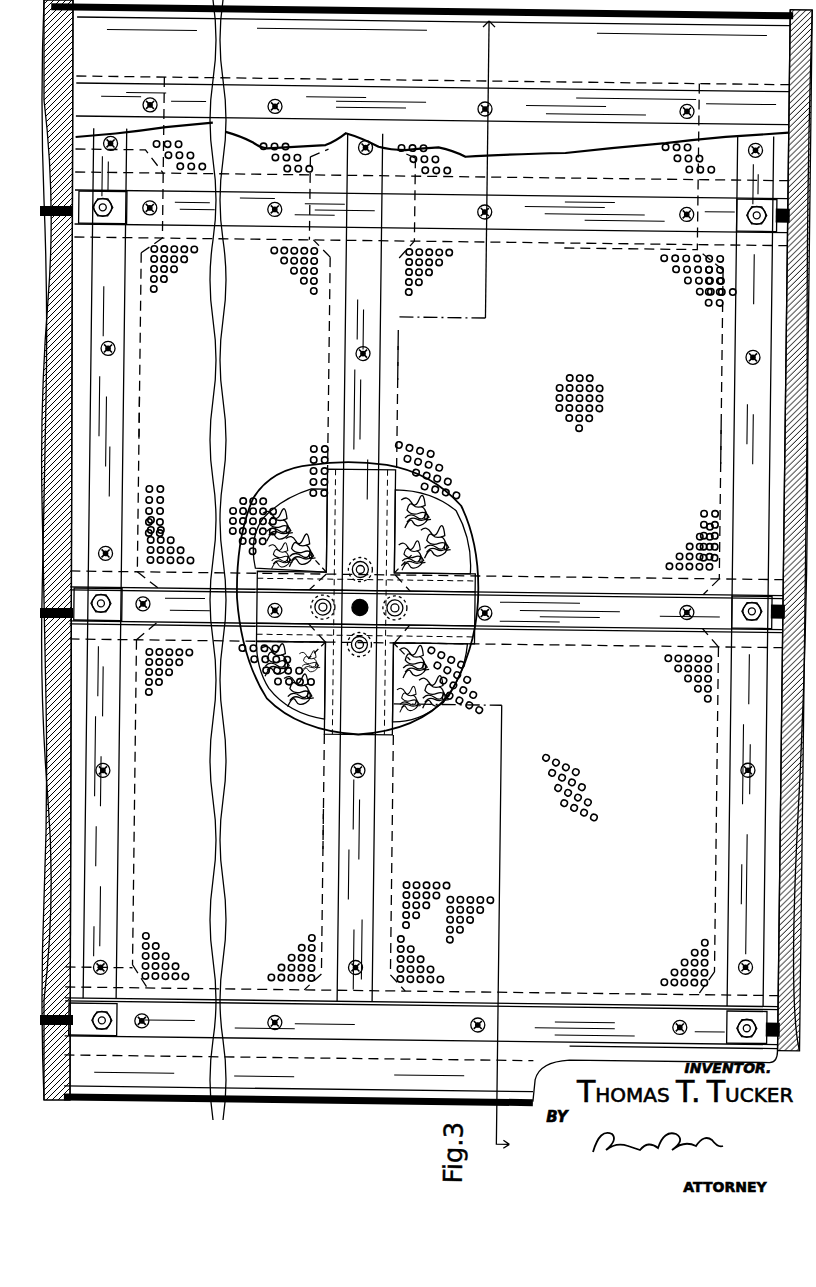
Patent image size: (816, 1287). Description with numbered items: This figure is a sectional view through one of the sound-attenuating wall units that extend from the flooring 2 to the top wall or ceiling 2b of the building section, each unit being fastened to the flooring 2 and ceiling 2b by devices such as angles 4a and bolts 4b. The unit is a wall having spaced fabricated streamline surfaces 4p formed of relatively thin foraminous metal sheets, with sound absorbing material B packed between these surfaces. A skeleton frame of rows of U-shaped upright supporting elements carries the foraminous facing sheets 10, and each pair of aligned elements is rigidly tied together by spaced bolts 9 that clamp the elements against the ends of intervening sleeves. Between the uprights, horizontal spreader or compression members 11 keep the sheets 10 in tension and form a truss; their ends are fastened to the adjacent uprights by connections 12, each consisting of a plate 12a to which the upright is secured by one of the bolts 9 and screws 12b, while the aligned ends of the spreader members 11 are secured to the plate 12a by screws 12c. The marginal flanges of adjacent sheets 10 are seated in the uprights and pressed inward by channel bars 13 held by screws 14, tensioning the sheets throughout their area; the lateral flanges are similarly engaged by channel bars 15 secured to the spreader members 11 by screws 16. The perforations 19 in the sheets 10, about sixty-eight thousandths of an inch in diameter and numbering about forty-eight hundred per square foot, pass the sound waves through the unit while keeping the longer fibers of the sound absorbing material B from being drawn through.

The flooring 2 is at (783, 524).
The top wall or ceiling 2b is at (72, 799).
The angles 4a is at (92, 225).
The bolts 4b is at (749, 628).
The streamline surfaces 4p is at (394, 572).
The bolts 9 is at (352, 608).
The foraminous facing sheets 10 is at (719, 356).
The spreader or compression members 11 is at (316, 490).
The connections 12 is at (365, 602).
The plate 12a is at (410, 608).
The screws 12b is at (318, 607).
The screws 12c is at (357, 562).
The channel bars 13 is at (472, 99).
The screws 14 is at (494, 610).
The channel bars 15 is at (137, 398).
The screws 16 is at (345, 351).
The perforations 19 is at (282, 264).
The sound absorbing material B is at (457, 504).